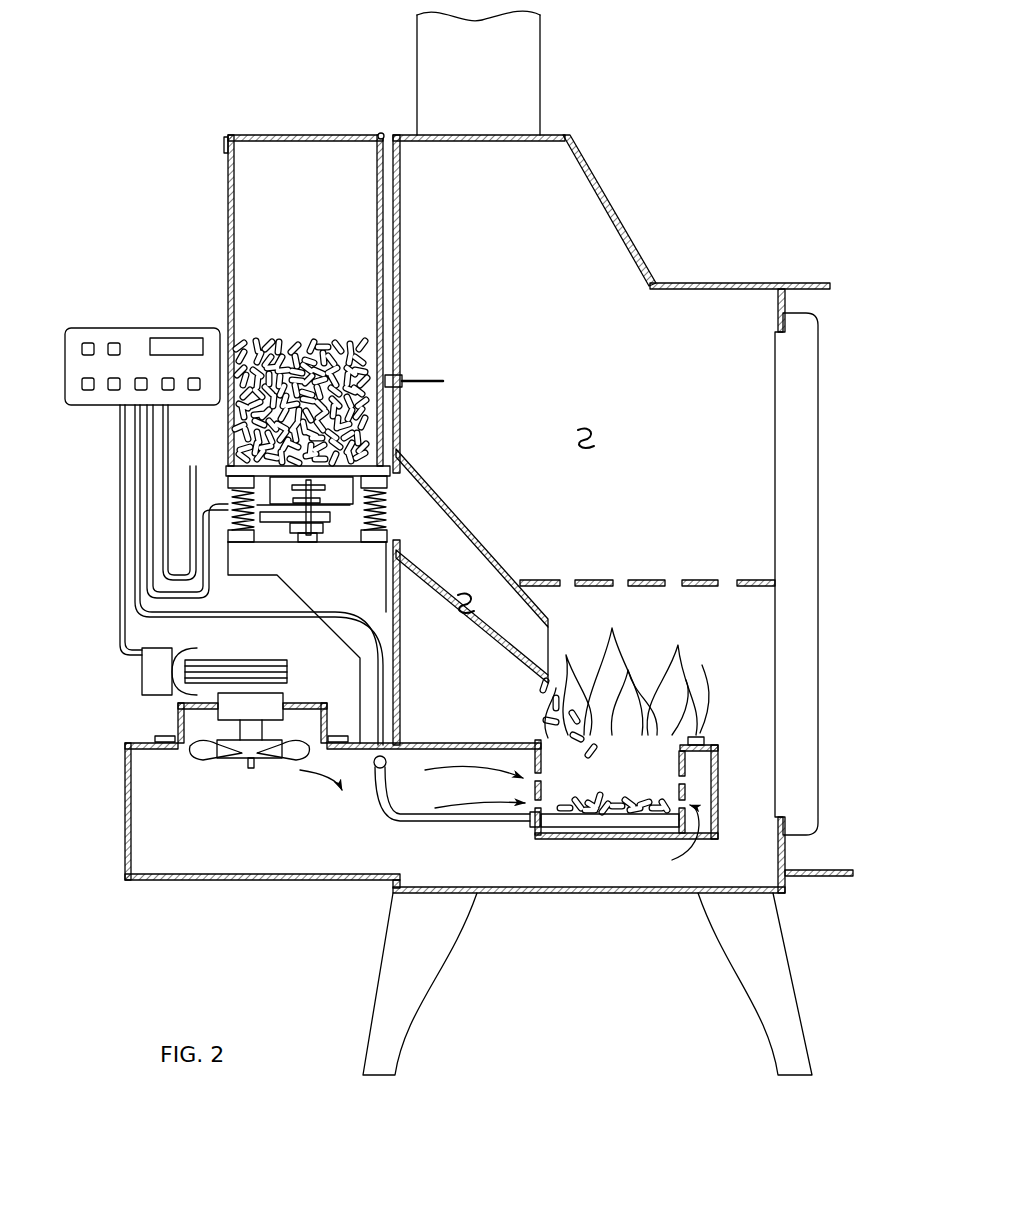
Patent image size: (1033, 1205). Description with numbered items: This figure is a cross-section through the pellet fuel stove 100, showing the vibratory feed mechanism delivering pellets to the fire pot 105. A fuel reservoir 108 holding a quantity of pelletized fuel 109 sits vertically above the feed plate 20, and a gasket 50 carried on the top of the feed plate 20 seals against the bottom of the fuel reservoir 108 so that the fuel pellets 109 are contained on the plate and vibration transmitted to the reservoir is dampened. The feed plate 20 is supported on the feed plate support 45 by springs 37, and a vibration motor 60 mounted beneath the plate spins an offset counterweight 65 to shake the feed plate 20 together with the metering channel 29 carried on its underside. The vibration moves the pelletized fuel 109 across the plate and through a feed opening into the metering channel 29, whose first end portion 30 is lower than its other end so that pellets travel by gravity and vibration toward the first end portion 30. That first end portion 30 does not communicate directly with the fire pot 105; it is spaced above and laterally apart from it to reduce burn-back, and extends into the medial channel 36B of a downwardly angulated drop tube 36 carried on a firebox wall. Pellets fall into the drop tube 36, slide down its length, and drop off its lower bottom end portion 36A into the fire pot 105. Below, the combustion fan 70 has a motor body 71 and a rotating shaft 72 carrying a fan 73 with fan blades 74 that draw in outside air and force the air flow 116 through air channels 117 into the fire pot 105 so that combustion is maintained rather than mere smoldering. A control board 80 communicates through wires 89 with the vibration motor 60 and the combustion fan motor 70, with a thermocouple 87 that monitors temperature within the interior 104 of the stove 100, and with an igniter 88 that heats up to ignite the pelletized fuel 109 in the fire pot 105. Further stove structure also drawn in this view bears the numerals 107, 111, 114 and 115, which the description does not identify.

The pellet fuel stove 100 is at (700, 283).
The interior of the stove 104 is at (592, 420).
The fire pot 105 is at (628, 884).
The flue / exhaust chimney 107 is at (521, 88).
The fuel reservoir 108 is at (228, 220).
The pelletized fuel 109 is at (288, 345).
The heat shield / rear panel 111 is at (797, 383).
The legs 114 is at (380, 1040).
The baffle 115 is at (748, 578).
The forced air-flow 116 is at (415, 838).
The air channels 117 is at (528, 814).
The feed plate 20 is at (397, 453).
The metering channel 29 is at (400, 478).
The first end portion of the metering channel 30 is at (410, 512).
The drop tube 36 is at (502, 566).
The lower bottom end portion of the drop tube 36A is at (550, 652).
The medial channel of the drop tube 36B is at (472, 538).
The springs 37 is at (366, 533).
The feed plate support 45 is at (275, 580).
The gasket 50 is at (227, 418).
The vibration motor 60 is at (335, 535).
The counterweight 65 is at (313, 489).
The combustion fan motor 70 is at (297, 697).
The motor body 71 is at (240, 705).
The rotating shaft 72 is at (248, 768).
The fan 73 is at (267, 752).
The fan blades 74 is at (202, 752).
The control board 80 is at (150, 325).
The thermocouple 87 is at (427, 380).
The igniter 88 is at (578, 826).
The wires 89 is at (152, 552).